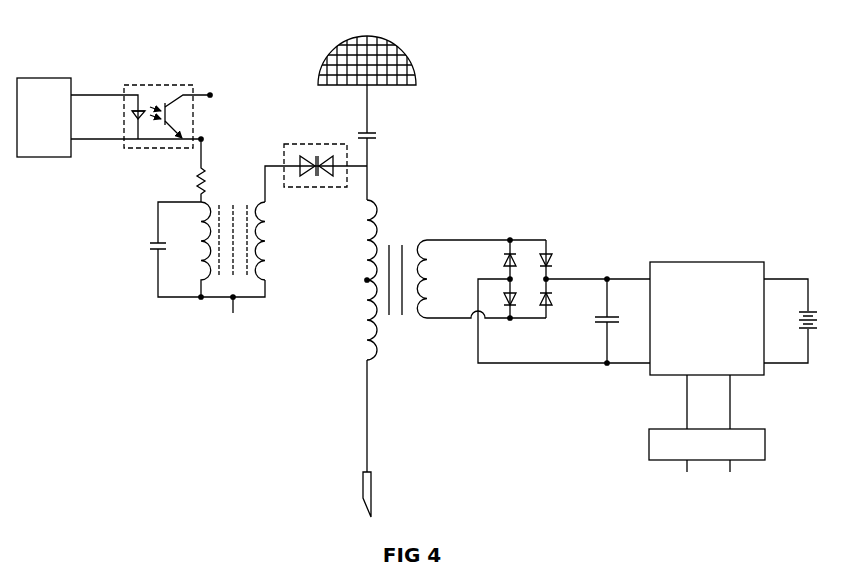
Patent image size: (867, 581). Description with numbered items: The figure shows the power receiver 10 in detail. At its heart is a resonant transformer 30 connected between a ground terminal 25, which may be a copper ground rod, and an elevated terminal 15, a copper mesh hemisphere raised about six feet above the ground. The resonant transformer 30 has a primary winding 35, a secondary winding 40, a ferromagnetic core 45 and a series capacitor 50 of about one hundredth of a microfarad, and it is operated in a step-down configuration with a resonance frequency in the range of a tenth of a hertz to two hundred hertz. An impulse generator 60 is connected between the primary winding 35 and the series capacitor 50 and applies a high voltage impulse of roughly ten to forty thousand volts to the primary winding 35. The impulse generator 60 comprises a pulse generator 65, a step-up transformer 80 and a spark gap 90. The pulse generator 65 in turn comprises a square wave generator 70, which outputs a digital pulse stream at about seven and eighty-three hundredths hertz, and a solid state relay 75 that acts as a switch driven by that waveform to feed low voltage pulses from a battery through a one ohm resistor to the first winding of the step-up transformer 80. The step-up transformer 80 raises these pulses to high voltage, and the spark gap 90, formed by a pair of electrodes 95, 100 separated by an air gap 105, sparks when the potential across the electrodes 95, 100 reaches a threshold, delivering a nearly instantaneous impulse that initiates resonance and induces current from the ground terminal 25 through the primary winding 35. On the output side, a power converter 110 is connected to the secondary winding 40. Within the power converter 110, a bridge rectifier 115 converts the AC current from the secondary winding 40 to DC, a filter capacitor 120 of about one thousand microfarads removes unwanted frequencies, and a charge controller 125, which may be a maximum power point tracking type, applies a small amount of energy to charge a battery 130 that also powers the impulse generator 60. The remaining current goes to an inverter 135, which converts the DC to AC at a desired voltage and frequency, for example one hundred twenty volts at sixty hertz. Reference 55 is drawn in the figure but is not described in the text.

The power receiver 10 is at (538, 106).
The elevated terminal 15 is at (390, 50).
The ground terminal 25 is at (363, 492).
The resonant transformer 30 is at (345, 343).
The primary winding 35 is at (376, 206).
The secondary winding 40 is at (417, 242).
The ferromagnetic core 45 is at (402, 312).
The series capacitor 50 is at (373, 132).
The rectifier circuit 55 is at (456, 201).
The impulse generator 60 is at (61, 249).
The pulse generator 65 is at (87, 39).
The square wave generator 70 is at (30, 78).
The solid state relay 75 is at (153, 148).
The step-up transformer 80 is at (190, 309).
The spark gap 90 is at (322, 180).
The electrode 95 is at (312, 151).
The electrode 100 is at (323, 151).
The air gap 105 is at (313, 180).
The power converter 110 is at (584, 397).
The bridge rectifier 115 is at (556, 244).
The filter capacitor 120 is at (612, 316).
The charge controller 125 is at (758, 262).
The battery 130 is at (812, 311).
The inverter 135 is at (757, 429).